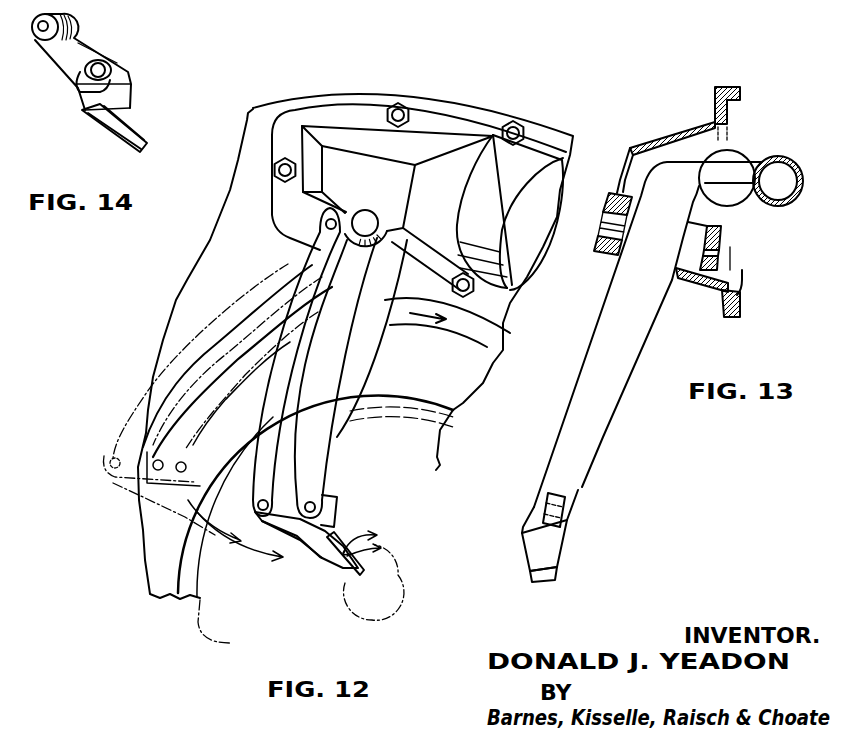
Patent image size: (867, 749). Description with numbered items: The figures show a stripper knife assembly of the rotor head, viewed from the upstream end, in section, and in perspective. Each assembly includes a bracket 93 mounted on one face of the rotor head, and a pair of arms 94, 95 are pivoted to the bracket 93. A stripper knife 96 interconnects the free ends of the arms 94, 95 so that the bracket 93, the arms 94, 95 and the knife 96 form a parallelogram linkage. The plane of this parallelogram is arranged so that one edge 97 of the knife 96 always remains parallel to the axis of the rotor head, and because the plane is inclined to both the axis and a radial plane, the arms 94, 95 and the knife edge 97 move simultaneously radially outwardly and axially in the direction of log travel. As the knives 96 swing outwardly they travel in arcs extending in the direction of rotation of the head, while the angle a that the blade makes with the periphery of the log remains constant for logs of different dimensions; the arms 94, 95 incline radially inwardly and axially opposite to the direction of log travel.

In FIG. 12, the bracket 93 is at (432, 208).
In FIG. 13, the bracket 93 is at (660, 144).
In FIG. 12, the arm 94 is at (310, 353).
In FIG. 12, the arm 95 is at (338, 436).
In FIG. 13, the arm 95 is at (607, 423).
In FIG. 14, the stripper knife 96 is at (57, 62).
In FIG. 12, the stripper knife 96 is at (323, 561).
In FIG. 13, the stripper knife 96 is at (560, 553).
In FIG. 14, the knife edge 97 is at (147, 150).
In FIG. 12, the knife edge 97 is at (379, 553).
In FIG. 13, the knife edge 97 is at (553, 580).
In FIG. 12, the angle a is at (378, 535).